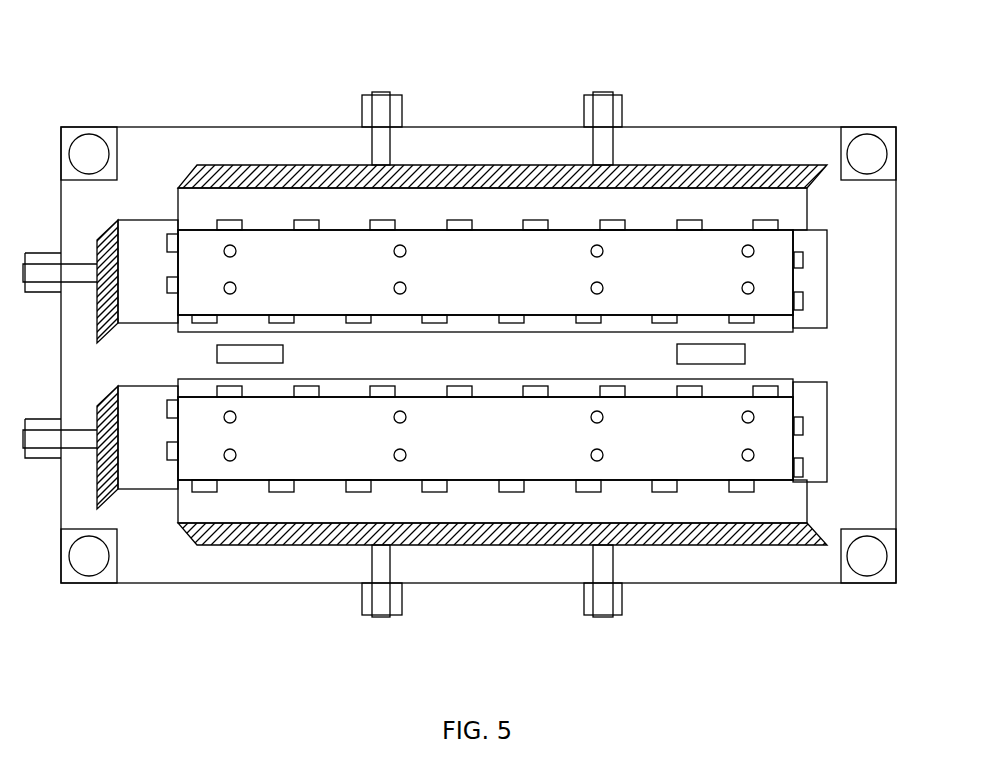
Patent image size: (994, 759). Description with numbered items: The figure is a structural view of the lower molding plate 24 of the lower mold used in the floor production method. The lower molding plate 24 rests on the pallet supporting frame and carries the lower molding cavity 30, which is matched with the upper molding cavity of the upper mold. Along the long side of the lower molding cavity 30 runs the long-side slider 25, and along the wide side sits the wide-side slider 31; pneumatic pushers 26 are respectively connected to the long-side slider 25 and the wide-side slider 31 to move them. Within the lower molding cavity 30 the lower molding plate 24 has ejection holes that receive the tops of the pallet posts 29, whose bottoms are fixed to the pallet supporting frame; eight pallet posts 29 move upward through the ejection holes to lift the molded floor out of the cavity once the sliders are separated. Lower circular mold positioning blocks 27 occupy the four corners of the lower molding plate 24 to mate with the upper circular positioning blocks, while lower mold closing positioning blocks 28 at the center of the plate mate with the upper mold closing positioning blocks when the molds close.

The lower molding plate 24 is at (163, 140).
The long-side slider 25 is at (427, 177).
The pneumatic pusher 26 is at (602, 140).
The lower circular mold positioning block 27 is at (89, 150).
The lower mold closing positioning block 28 is at (737, 355).
The pallet post 29 is at (748, 251).
The lower molding cavity 30 is at (295, 224).
The wide-side slider 31 is at (107, 297).